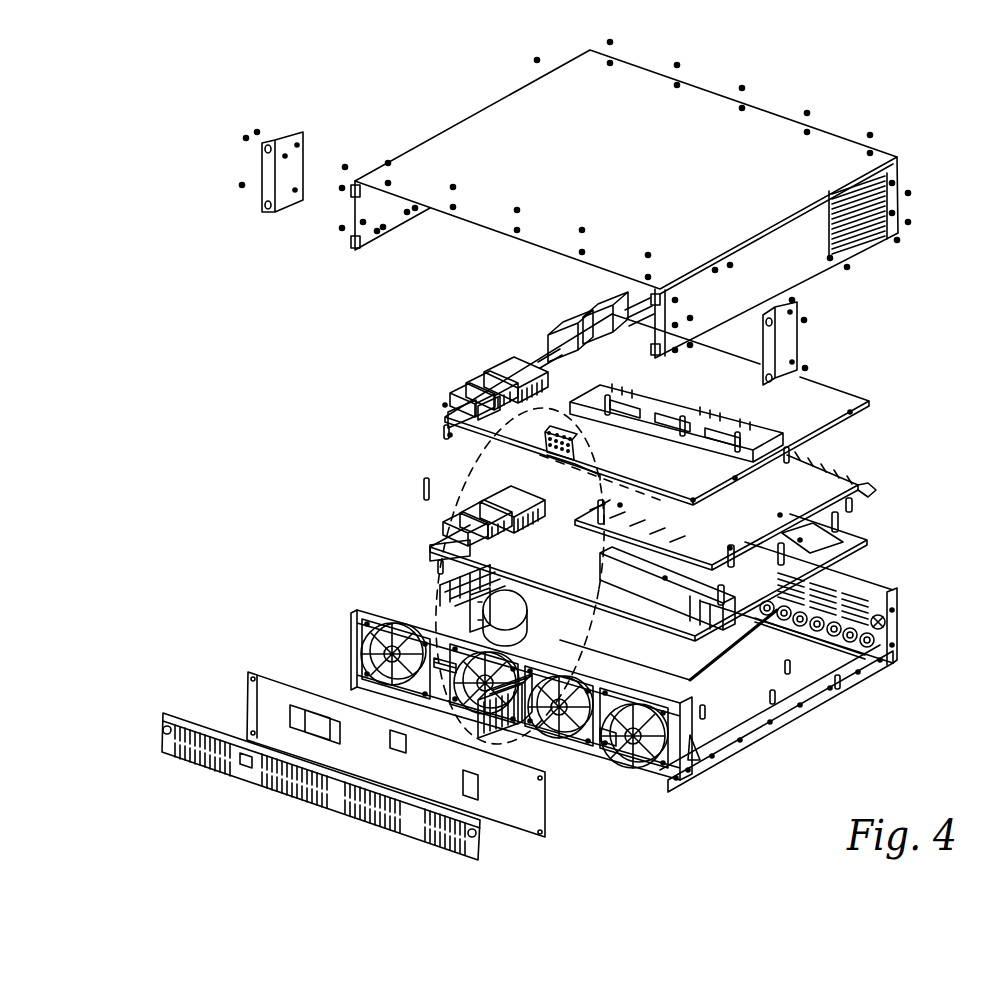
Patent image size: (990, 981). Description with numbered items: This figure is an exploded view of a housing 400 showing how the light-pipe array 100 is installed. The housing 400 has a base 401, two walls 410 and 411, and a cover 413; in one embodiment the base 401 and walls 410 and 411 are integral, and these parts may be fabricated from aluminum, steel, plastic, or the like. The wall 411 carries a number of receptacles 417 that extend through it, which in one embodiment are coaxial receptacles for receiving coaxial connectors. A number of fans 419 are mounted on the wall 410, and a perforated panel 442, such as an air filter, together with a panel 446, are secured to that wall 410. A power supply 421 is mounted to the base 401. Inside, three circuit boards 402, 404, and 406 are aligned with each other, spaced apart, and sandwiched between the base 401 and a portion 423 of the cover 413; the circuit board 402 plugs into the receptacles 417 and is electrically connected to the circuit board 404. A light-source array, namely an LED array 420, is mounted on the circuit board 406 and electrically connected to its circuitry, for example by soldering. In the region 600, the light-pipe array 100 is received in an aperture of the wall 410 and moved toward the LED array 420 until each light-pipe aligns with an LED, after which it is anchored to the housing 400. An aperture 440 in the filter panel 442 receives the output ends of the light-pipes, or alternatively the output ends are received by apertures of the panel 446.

The housing 400 is at (372, 101).
The base 401 is at (761, 701).
The circuit board 402 is at (856, 480).
The circuit board 404 is at (868, 540).
The circuit board 406 is at (870, 401).
The wall 410 is at (372, 605).
The wall 411 is at (893, 592).
The cover 413 is at (900, 160).
The receptacles 417 is at (872, 641).
The fans 419 is at (368, 648).
The LED array 420 is at (545, 453).
The power supply 421 is at (512, 600).
The portion of cover 423 is at (782, 132).
The aperture 440 is at (386, 738).
The perforated panel 442 is at (548, 818).
The panel 446 is at (482, 853).
The region 600 is at (474, 494).
The light-pipe array 100 is at (524, 714).